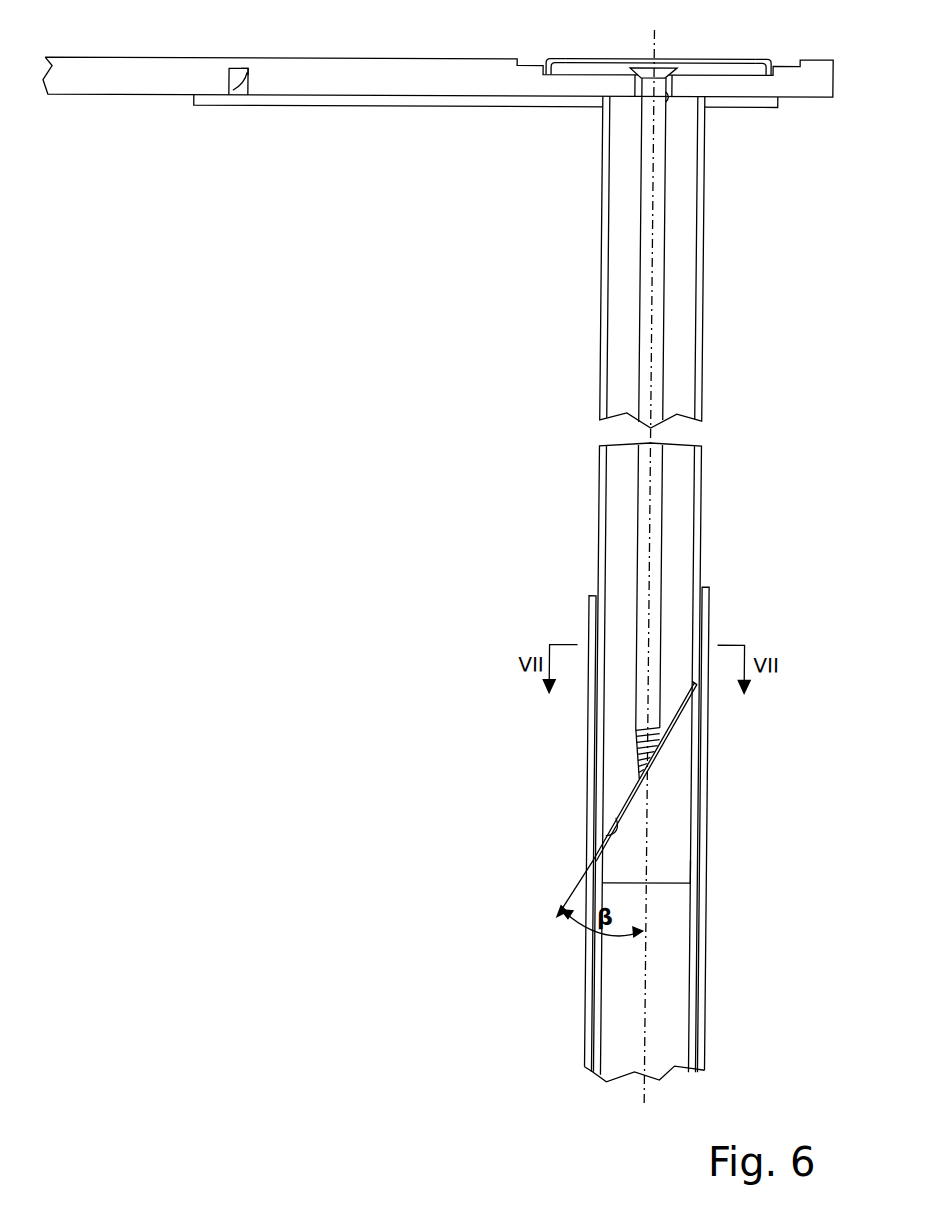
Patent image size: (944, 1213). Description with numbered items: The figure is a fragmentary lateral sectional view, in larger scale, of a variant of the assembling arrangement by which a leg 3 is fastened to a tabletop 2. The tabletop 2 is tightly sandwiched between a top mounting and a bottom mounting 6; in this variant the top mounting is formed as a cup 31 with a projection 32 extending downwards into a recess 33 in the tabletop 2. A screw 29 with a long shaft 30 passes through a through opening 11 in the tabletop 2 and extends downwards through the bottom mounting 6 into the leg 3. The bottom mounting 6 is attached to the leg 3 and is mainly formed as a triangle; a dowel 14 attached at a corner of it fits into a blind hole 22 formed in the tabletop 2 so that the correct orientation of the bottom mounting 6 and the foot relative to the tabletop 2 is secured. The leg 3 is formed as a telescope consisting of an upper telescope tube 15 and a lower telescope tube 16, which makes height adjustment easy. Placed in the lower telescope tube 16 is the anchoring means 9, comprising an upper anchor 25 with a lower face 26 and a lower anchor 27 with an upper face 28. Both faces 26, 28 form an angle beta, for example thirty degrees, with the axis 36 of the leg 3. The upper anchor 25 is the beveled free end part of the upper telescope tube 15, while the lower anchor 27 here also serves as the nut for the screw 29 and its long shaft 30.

The tabletop 2 is at (315, 59).
The leg 3 is at (573, 286).
The bottom mounting 6 is at (455, 108).
The anchoring means 9 is at (677, 865).
The through opening 11 is at (662, 97).
The dowel 14 is at (244, 88).
The upper telescope tube 15 is at (700, 540).
The lower telescope tube 16 is at (709, 1037).
The blind hole 22 is at (242, 72).
The upper anchor 25 is at (617, 772).
The lower face 26 is at (602, 838).
The lower anchor 27 is at (668, 810).
The upper face 28 is at (663, 741).
The screw 29 is at (655, 68).
The long shaft 30 is at (655, 313).
The cup 31 is at (762, 62).
The projection 32 is at (597, 78).
The recess 33 is at (553, 62).
The axis 36 is at (645, 1017).